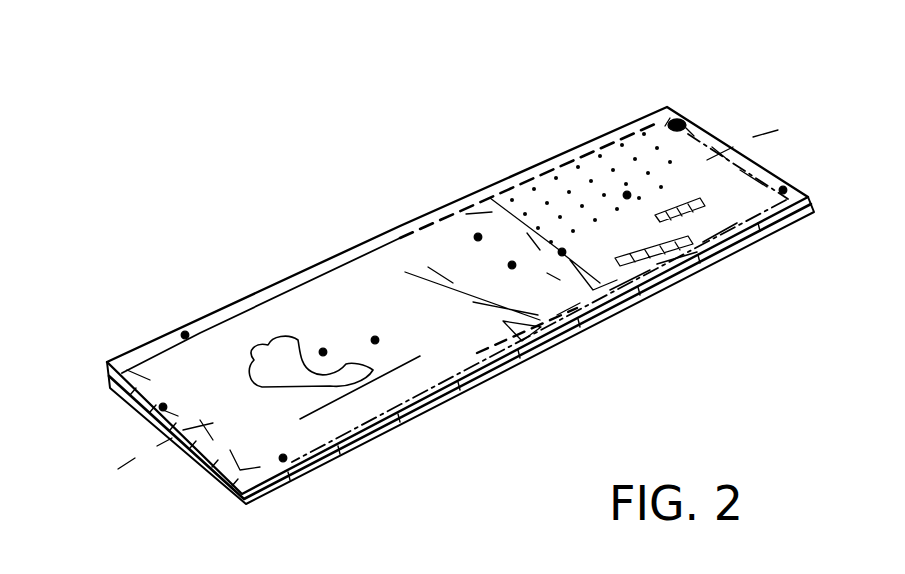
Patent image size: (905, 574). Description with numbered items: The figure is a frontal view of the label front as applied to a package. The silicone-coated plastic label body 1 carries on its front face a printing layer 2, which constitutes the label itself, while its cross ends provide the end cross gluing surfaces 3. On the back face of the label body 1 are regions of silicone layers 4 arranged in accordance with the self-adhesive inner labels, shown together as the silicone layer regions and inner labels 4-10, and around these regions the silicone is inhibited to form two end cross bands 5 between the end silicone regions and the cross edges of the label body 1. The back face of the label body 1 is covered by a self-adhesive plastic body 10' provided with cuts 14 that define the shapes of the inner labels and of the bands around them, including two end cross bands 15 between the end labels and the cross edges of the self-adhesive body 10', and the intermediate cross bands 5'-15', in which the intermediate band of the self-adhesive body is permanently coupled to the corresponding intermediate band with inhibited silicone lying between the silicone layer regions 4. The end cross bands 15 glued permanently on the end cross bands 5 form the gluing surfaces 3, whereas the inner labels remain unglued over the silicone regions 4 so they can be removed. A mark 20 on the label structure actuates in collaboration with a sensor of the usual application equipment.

The silicone-coated plastic label body 1 is at (448, 248).
The printing layer 2 is at (478, 236).
The end cross gluing surfaces 3 is at (160, 207).
The silicone layer regions 4 is at (813, 112).
The end cross bands 5 is at (468, 279).
The end cross bands 15 is at (119, 360).
The mark 20 is at (679, 121).
The silicone layer regions with self-adhesive inner labels 4-10 is at (627, 195).
The intermediate cross bands 5'-15' is at (499, 184).
The self-adhesive plastic body 10' is at (370, 510).
The cuts 14 is at (585, 337).